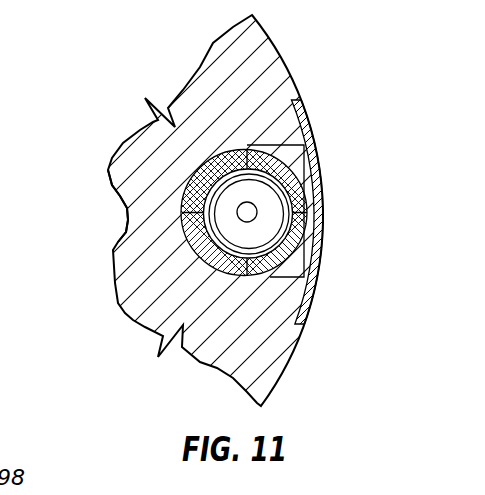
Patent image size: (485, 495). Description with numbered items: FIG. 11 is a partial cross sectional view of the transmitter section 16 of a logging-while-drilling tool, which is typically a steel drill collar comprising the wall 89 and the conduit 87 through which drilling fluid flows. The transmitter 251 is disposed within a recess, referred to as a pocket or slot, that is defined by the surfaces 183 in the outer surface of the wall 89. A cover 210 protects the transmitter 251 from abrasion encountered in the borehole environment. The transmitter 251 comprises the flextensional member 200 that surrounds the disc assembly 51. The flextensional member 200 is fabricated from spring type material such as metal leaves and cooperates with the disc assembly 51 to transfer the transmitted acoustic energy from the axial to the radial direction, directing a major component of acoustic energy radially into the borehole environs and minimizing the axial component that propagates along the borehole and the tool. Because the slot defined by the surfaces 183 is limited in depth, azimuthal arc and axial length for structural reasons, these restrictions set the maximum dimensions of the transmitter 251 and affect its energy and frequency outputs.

The transmitter section 16 is at (268, 58).
The wall 89 is at (162, 171).
The conduit 87 is at (122, 203).
The cover 210 is at (315, 170).
The disc assembly 51 is at (261, 212).
The flextensional member 200 is at (320, 229).
The surfaces 183 is at (311, 270).
The transmitter 251 is at (246, 282).